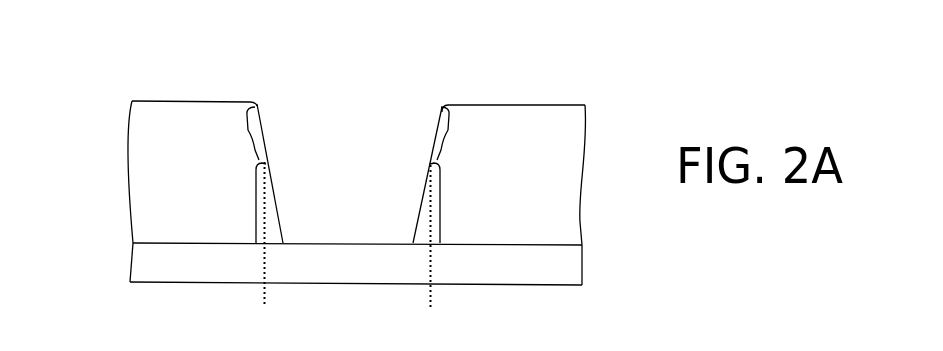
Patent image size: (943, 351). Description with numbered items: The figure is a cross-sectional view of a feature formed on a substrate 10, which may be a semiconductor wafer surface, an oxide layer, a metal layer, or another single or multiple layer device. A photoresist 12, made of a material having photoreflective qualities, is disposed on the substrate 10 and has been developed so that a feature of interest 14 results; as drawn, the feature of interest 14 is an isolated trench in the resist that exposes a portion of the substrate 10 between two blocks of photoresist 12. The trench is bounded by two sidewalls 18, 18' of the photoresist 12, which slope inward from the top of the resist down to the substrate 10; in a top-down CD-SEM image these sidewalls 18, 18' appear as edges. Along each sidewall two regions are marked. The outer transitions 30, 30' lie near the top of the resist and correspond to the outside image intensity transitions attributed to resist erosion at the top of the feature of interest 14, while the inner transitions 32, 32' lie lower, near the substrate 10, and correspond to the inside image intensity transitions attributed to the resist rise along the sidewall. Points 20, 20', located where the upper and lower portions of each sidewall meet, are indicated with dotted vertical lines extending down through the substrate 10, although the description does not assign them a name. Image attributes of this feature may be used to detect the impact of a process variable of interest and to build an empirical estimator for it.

The substrate 10 is at (143, 258).
The photoresist 12 is at (133, 142).
The feature of interest 14 is at (348, 118).
The sidewall 18 is at (275, 144).
The sidewall 18' is at (425, 145).
The transition point on sidewall 20 is at (298, 218).
The transition point on sidewall 20' is at (398, 218).
The outer transition 30 is at (214, 136).
The outer transition 30' is at (485, 137).
The inner transition 32 is at (224, 203).
The inner transition 32' is at (476, 203).